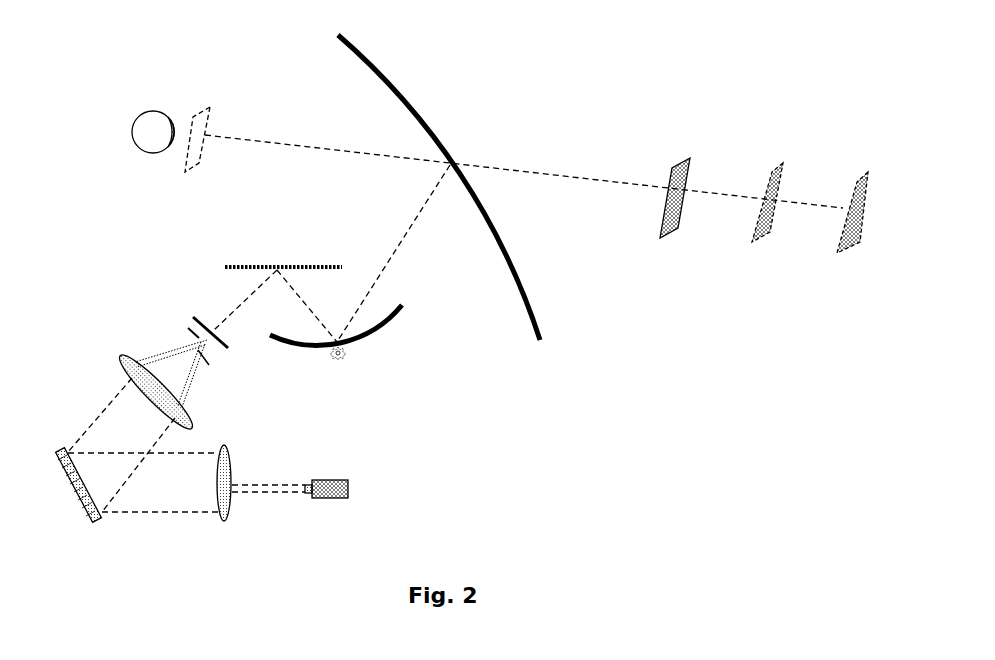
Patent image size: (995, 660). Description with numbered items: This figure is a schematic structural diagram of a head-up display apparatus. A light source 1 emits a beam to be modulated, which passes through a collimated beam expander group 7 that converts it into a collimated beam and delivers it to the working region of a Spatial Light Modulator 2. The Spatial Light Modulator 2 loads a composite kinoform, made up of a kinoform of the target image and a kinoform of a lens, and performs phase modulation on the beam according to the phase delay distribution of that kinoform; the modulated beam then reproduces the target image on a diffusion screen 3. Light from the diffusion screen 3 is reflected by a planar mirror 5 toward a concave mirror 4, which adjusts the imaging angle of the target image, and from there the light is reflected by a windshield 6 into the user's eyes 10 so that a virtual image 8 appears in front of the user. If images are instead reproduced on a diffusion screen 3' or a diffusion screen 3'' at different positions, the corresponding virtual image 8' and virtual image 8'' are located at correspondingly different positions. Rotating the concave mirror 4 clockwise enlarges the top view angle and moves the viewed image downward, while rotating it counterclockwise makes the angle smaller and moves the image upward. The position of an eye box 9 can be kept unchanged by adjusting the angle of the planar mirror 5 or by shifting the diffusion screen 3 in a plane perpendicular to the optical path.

The light source 1 is at (333, 488).
The Spatial Light Modulator 2 is at (98, 518).
The diffusion screen 3 is at (199, 321).
The diffusion screen 3' is at (174, 327).
The diffusion screen 3'' is at (225, 366).
The concave mirror 4 is at (383, 323).
The planar mirror 5 is at (228, 265).
The windshield 6 is at (429, 128).
The collimated beam expander group 7 is at (229, 518).
The virtual image 8 is at (665, 182).
The virtual image 8' is at (847, 194).
The virtual image 8'' is at (759, 184).
The eye box 9 is at (197, 163).
The user's eyes 10 is at (136, 118).